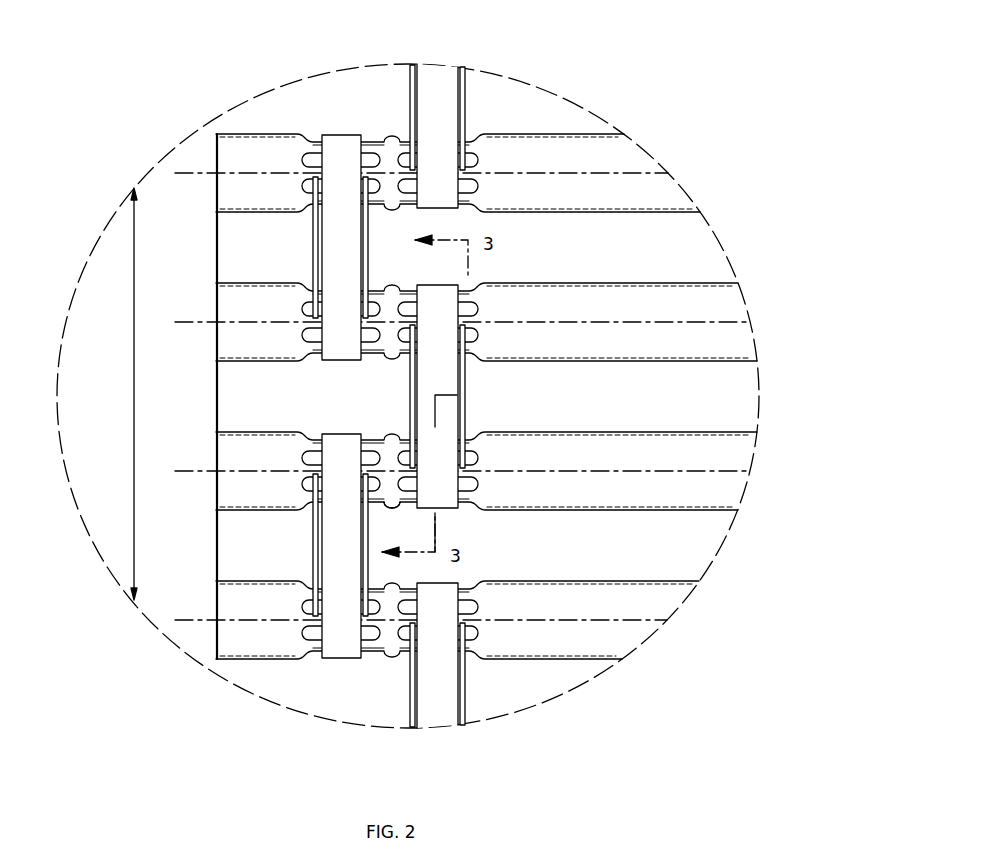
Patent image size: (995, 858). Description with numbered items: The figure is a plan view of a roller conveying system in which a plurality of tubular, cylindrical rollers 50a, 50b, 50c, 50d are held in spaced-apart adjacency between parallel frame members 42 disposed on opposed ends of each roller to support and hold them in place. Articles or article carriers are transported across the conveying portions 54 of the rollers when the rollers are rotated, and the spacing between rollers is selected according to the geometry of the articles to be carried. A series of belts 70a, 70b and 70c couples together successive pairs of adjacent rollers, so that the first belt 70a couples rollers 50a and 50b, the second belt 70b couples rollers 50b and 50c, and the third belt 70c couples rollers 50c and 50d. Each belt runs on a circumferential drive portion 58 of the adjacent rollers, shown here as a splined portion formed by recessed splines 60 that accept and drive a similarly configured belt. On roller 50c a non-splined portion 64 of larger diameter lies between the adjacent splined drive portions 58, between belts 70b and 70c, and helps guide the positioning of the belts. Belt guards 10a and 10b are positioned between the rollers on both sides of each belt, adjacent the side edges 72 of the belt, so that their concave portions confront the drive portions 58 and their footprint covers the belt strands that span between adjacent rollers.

The guard 10a is at (393, 225).
The guard 10b is at (318, 250).
The frame members 42 is at (184, 400).
The roller 50a is at (538, 150).
The roller 50b is at (612, 300).
The roller 50c is at (652, 490).
The roller 50d is at (585, 642).
The conveying portions 54 is at (593, 345).
The drive portion 58 is at (465, 320).
The recessed splines 60 is at (373, 620).
The non-splined portion 64 is at (388, 493).
The belt 70a is at (358, 256).
The belt 70b is at (456, 375).
The belt 70c is at (359, 530).
The side edges 72 is at (410, 412).